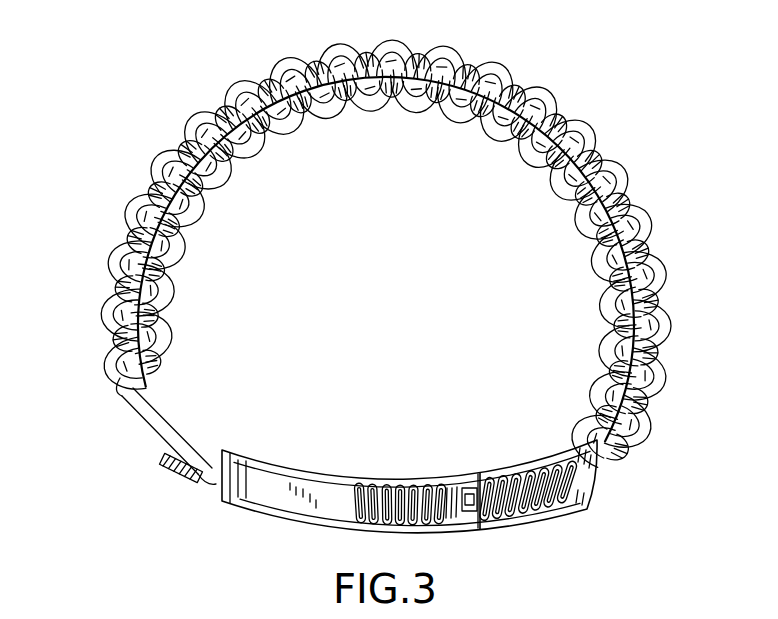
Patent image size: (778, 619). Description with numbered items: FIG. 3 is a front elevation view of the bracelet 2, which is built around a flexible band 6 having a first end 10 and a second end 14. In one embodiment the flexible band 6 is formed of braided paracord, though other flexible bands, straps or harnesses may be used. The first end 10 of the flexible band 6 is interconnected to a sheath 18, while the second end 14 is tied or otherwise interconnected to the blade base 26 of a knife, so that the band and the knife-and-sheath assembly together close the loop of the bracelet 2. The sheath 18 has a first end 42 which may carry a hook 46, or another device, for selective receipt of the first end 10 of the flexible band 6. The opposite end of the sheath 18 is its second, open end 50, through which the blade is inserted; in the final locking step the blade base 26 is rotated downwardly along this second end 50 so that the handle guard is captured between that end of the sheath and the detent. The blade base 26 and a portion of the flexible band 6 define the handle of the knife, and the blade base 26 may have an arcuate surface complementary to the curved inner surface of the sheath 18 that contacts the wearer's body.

The bracelet 2 is at (146, 106).
The flexible band 6 is at (524, 90).
The first end 10 is at (178, 432).
The second end 14 is at (637, 456).
The sheath 18 is at (331, 485).
The blade base 26 is at (573, 497).
The first end 42 is at (268, 517).
The hook 46 is at (213, 485).
The second, open end of the sheath 50 is at (455, 527).